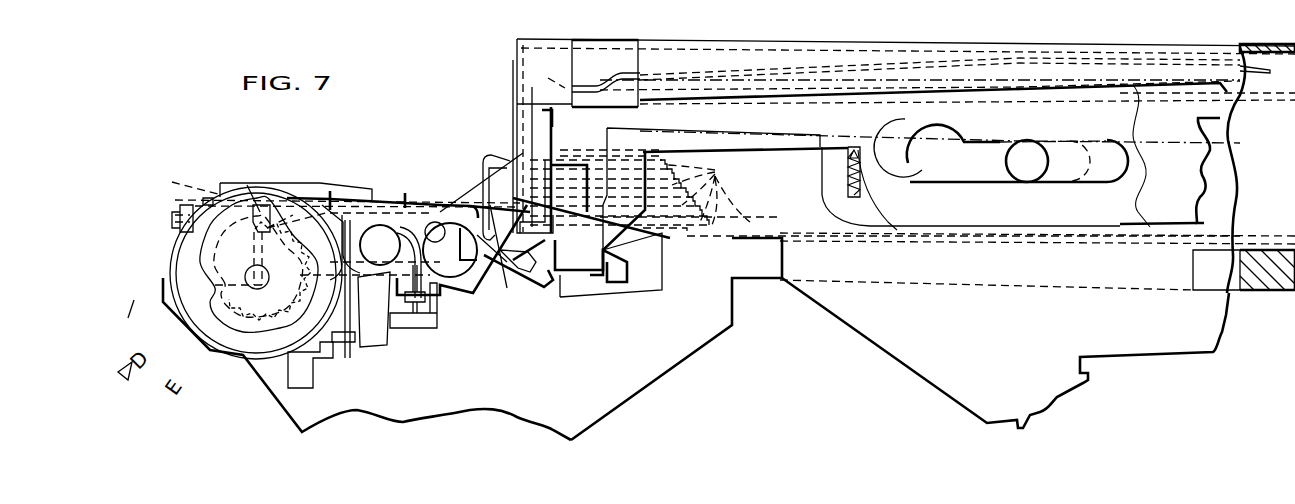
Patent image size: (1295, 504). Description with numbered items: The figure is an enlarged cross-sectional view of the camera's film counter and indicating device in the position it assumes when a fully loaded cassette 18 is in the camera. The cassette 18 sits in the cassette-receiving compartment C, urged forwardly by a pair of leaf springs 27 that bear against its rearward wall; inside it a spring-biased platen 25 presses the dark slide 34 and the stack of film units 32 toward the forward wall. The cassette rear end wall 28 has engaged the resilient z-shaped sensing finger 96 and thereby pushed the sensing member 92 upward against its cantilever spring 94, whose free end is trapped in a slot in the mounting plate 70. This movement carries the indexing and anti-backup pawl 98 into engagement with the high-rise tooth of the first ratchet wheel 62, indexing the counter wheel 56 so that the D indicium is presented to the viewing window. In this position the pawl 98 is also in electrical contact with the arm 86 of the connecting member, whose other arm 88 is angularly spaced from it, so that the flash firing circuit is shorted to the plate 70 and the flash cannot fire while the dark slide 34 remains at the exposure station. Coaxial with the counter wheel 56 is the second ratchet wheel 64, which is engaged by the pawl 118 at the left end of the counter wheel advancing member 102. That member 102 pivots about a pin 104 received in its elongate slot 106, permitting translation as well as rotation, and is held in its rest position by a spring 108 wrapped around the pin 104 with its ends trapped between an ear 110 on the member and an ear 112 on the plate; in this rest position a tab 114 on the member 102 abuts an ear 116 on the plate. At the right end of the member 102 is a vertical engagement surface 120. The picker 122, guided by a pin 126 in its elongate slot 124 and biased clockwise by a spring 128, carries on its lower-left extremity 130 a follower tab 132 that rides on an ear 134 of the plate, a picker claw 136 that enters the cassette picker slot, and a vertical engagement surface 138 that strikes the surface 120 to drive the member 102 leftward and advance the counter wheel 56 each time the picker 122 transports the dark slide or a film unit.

The cassette 18 is at (870, 80).
The leaf springs 27 is at (780, 60).
The cassette-receiving compartment C is at (1285, 72).
The rear end wall 28 is at (513, 112).
The spring-biased platen 25 is at (628, 143).
The film units 32 is at (720, 172).
The dark slide 34 is at (830, 222).
The picker 122 is at (886, 230).
The spring 128 is at (884, 176).
The elongate slot 124 is at (990, 176).
The pin 126 is at (1022, 150).
The picker claw 136 is at (603, 243).
The lower-left extremity 130 is at (598, 290).
The engagement surface 138 is at (548, 283).
The mounting plate 70 is at (595, 390).
The sensing finger 96 is at (510, 150).
The counter wheel advancing member 102 is at (408, 195).
The pawl 118 is at (305, 185).
The indexing and anti-backup pawl 98 is at (276, 200).
The pin 104 is at (395, 222).
The spring 108 is at (402, 212).
The elongate slot 106 is at (455, 218).
The sensing member 92 is at (470, 205).
The engagement surface 120 is at (493, 275).
The ear 110 is at (427, 323).
The ear 116 is at (427, 328).
The tab 114 is at (372, 320).
The ear 112 is at (340, 343).
The counter wheel 56 is at (258, 372).
The arm 88 is at (243, 273).
The arm 86 is at (243, 245).
The second ratchet wheel 64 is at (247, 185).
The first ratchet wheel 62 is at (220, 185).
The cantilever spring 94 is at (172, 221).
The ear 134 is at (520, 270).
The follower tab 132 is at (538, 282).